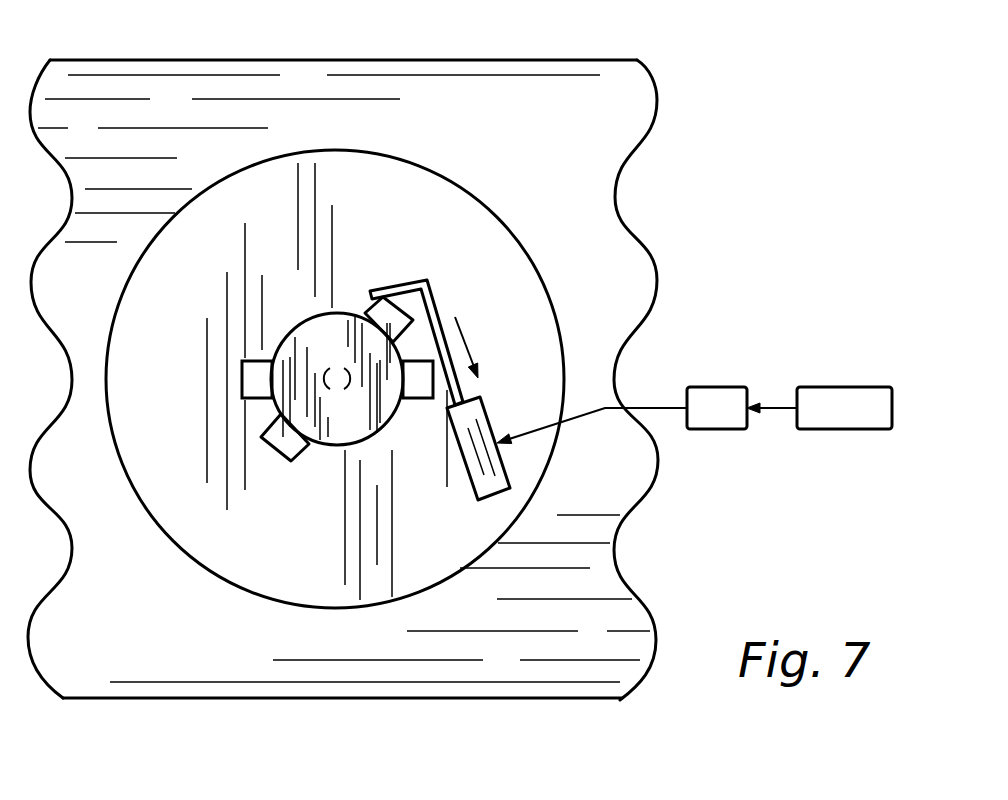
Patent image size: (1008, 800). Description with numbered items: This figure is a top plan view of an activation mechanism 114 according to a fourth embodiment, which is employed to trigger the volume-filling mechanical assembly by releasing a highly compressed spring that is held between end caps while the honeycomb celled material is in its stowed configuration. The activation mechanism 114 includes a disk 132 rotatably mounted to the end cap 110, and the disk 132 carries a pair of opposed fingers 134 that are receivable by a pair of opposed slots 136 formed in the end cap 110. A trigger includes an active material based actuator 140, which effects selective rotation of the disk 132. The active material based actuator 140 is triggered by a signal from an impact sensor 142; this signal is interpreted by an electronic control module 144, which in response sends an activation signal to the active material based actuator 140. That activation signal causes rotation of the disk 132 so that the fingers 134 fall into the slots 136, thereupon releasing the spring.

The end cap 110 is at (608, 127).
The activation mechanism 114 is at (173, 403).
The disk 132 is at (306, 317).
The fingers 134 is at (432, 294).
The slots 136 is at (257, 380).
The active material based actuator 140 is at (490, 476).
The impact sensor 142 is at (847, 387).
The electronic control module 144 is at (717, 387).